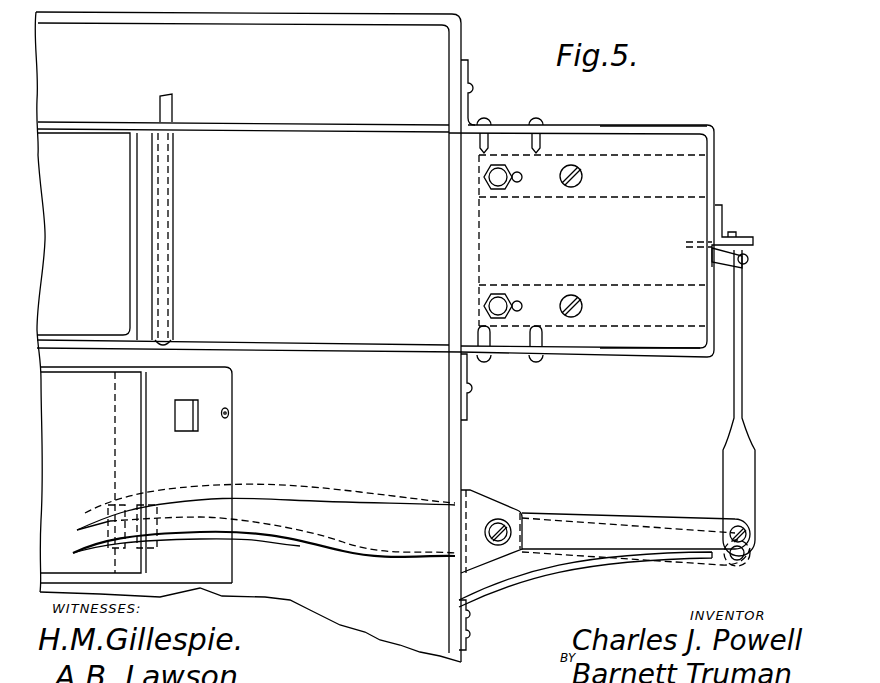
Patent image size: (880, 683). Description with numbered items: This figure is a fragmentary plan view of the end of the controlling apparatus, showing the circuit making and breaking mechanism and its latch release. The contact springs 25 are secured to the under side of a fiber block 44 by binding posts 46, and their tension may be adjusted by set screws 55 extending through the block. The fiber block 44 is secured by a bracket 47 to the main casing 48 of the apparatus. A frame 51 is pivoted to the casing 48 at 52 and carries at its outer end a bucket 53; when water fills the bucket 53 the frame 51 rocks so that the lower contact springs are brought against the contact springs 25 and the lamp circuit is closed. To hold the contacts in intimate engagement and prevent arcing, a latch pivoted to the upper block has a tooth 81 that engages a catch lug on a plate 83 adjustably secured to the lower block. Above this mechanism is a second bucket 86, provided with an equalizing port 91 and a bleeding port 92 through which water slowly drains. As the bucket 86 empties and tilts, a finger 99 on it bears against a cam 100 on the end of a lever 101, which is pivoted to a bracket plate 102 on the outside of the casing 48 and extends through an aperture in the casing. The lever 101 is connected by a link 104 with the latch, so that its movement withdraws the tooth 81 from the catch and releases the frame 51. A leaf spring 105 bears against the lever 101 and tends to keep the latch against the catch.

The contact springs 25 is at (648, 172).
The fiber block 44 is at (678, 222).
The binding posts 46 is at (498, 177).
The bracket 47 is at (470, 78).
The main casing 48 is at (452, 442).
The frame 51 is at (361, 344).
The pivot 52 is at (172, 110).
The bucket 53 is at (98, 152).
The set screws 55 is at (574, 188).
The tooth 81 is at (748, 251).
The plate 83 is at (723, 229).
The bucket 86 is at (130, 463).
The equalizing port 91 is at (185, 412).
The bleeding port 92 is at (229, 413).
The finger 99 is at (140, 545).
The cam 100 is at (203, 528).
The lever 101 is at (552, 533).
The bracket plate 102 is at (470, 492).
The link 104 is at (740, 407).
The leaf spring 105 is at (599, 556).